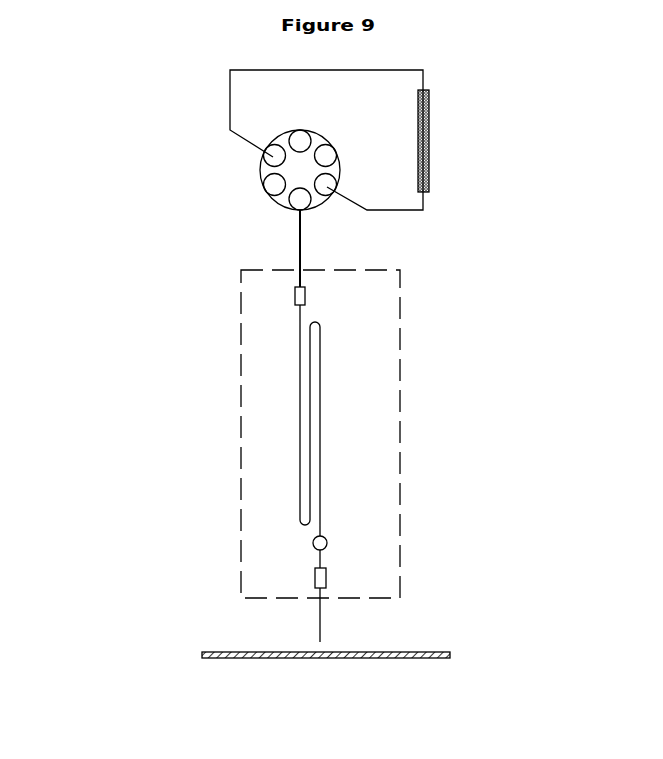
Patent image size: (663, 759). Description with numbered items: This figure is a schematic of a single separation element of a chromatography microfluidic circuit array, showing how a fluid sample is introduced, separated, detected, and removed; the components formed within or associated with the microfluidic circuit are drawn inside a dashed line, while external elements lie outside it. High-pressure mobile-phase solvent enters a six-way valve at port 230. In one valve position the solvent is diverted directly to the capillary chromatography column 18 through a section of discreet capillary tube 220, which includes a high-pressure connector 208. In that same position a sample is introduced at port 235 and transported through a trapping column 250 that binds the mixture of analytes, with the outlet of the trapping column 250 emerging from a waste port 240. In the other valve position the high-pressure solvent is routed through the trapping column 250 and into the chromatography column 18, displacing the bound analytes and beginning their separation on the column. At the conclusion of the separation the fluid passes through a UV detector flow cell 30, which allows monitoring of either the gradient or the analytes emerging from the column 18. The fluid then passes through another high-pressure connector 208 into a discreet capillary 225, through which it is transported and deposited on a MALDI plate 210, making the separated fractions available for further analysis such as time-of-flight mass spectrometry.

The capillary chromatography column 18 is at (320, 403).
The UV detector flow cell 30 is at (326, 538).
The high-pressure connector 208 is at (305, 294).
The MALDI plate 210 is at (252, 652).
The discreet capillary tube 220 is at (300, 250).
The discreet capillary 225 is at (321, 617).
The port 230 is at (273, 186).
The port 235 is at (300, 130).
The waste port 240 is at (327, 157).
The trapping column 250 is at (430, 143).